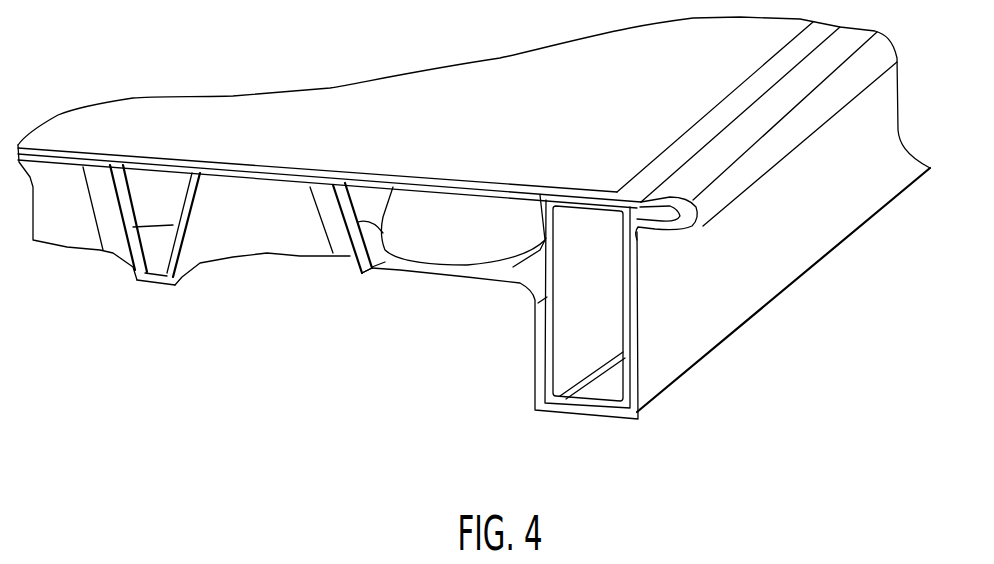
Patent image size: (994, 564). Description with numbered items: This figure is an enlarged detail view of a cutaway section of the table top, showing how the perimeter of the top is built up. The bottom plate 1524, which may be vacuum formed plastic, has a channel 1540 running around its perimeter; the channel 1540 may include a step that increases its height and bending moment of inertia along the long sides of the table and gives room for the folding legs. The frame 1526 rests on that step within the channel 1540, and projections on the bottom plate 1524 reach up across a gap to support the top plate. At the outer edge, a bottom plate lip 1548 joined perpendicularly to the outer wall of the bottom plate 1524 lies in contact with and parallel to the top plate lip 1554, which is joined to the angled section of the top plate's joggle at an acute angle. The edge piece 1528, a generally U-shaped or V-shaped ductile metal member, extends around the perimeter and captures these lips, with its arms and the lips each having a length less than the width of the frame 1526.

The bottom plate 1524 is at (182, 289).
The frame 1526 is at (598, 307).
The edge piece 1528 is at (725, 180).
The channel 1540 is at (492, 389).
The bottom plate lip 1548 is at (663, 223).
The top plate lip 1554 is at (676, 218).